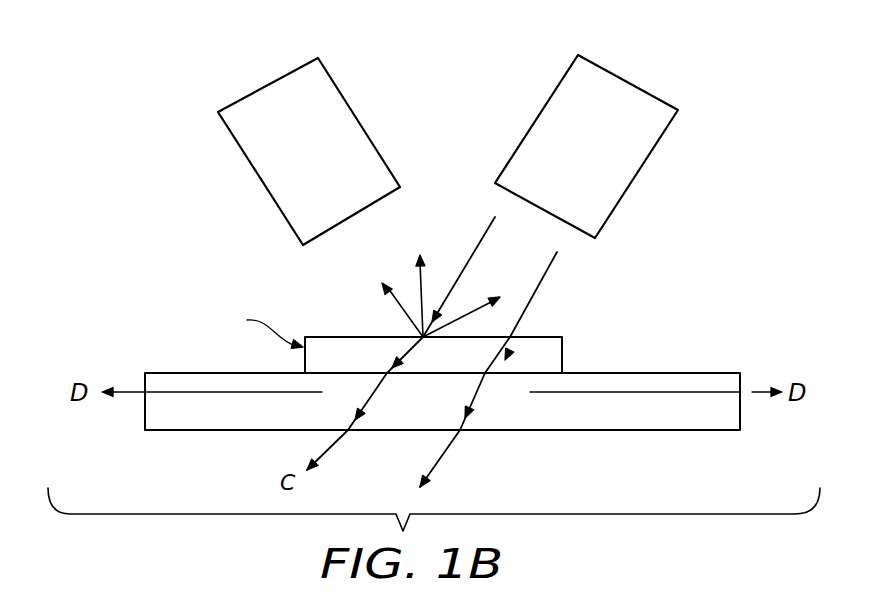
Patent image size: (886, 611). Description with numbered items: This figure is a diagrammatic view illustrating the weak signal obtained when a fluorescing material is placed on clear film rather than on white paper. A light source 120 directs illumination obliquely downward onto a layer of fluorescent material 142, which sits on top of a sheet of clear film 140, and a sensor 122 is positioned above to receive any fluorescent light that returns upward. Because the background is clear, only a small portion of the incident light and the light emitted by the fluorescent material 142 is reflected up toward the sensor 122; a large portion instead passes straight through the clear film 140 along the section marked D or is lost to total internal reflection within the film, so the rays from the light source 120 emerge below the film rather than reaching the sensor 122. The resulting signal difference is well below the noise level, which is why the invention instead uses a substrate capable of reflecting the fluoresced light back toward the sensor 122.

The light source 120 is at (557, 85).
The sensor 122 is at (352, 102).
The clear film 140 is at (193, 433).
The fluorescent material 142 is at (335, 337).